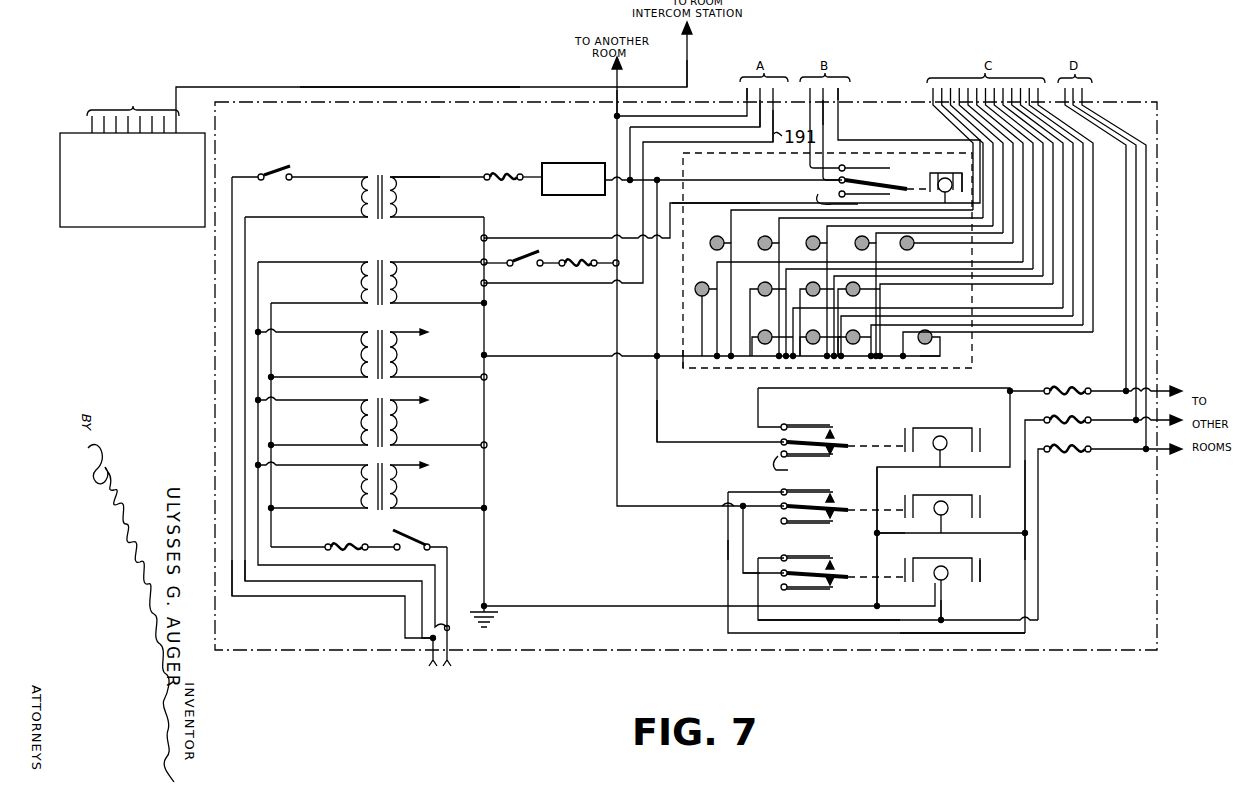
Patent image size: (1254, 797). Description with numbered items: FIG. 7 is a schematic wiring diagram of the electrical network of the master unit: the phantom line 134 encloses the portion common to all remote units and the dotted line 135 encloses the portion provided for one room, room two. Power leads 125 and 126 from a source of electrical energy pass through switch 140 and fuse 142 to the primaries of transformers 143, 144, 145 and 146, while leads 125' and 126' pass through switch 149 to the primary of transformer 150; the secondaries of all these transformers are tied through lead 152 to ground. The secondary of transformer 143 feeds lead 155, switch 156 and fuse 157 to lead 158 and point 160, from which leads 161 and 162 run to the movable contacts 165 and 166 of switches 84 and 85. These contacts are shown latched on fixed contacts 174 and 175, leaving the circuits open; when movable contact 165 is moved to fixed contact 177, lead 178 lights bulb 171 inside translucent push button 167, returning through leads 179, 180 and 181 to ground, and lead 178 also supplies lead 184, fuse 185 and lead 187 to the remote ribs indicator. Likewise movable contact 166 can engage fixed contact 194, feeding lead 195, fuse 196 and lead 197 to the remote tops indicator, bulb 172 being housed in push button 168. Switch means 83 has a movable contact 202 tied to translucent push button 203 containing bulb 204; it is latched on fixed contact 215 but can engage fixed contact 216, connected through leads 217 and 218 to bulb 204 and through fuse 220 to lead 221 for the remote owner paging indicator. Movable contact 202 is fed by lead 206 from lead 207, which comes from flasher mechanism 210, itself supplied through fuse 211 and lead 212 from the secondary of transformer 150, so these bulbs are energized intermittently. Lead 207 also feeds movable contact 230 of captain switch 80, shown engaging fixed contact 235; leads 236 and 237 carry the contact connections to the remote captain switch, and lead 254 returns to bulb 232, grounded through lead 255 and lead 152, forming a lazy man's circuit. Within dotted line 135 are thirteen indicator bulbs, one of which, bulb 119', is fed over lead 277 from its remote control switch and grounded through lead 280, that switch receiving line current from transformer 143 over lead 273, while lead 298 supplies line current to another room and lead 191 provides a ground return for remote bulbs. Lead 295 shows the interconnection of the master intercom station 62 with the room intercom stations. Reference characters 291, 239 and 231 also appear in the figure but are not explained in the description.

The master intercom station 62 is at (100, 227).
The lead 295 is at (402, 86).
The lead 298 is at (623, 72).
The lead 273 is at (720, 116).
The switch 149 is at (278, 166).
The transformer 150 is at (384, 176).
The lead 212 is at (414, 176).
The fuse 211 is at (498, 170).
The flasher mechanism 210 is at (570, 162).
The transformer 143 is at (385, 262).
The lead 155 is at (406, 266).
The transformer 144 is at (385, 332).
The transformer 145 is at (388, 400).
The transformer 146 is at (375, 470).
The lead 152 is at (486, 418).
The fuse 142 is at (352, 545).
The switch 140 is at (416, 542).
The lead 125 is at (404, 664).
The lead 126 is at (476, 611).
The lead 125' is at (259, 597).
The lead 126' is at (302, 593).
The lead 181 is at (634, 606).
The switch 156 is at (525, 248).
The fuse 157 is at (564, 272).
The lead 191 is at (576, 286).
The lead 158 is at (616, 318).
The lead 236 is at (794, 110).
The lead 254 is at (843, 104).
The conductor 291 is at (763, 122).
The lead 237 is at (826, 120).
The switch contact 239 is at (874, 178).
The movable contact 230 is at (888, 168).
The fixed contact 235 is at (815, 192).
The relay armature link 231 is at (928, 187).
The captain switch 80 is at (937, 172).
The bulb 232 is at (956, 176).
The lead 207 is at (693, 176).
The lead 255 is at (712, 202).
The dotted line 135 is at (690, 372).
The lead 206 is at (676, 404).
The bulb 119' is at (788, 284).
The lead 280 is at (940, 356).
The lead 277 is at (1106, 178).
The lead 187 is at (1134, 242).
The lead 221 is at (1134, 262).
The lead 197 is at (1156, 284).
The lead 218 is at (1020, 391).
The fuse 220 is at (1074, 386).
The fuse 185 is at (1086, 428).
The fuse 196 is at (1089, 460).
The lead 184 is at (1028, 496).
The lead 217 is at (967, 388).
The fixed contact 216 is at (798, 424).
The movable contact portion 202 is at (852, 437).
The fixed contact 215 is at (776, 470).
The switch means 83 is at (901, 426).
The translucent push button portion 203 is at (895, 426).
The bulb 204 is at (946, 436).
The point 160 is at (740, 496).
The fixed contact 177 is at (804, 492).
The movable contact portion 165 is at (844, 510).
The fixed contact 174 is at (804, 522).
The lead 161 is at (752, 508).
The bulb 171 is at (922, 506).
The switch 84 is at (946, 492).
The translucent push button portion 167 is at (976, 512).
The lead 179 is at (895, 534).
The fixed contact member 194 is at (800, 556).
The movable contact portion 166 is at (842, 574).
The fixed contact 175 is at (802, 590).
The lead 162 is at (738, 548).
The lead 178 is at (724, 540).
The switch 85 is at (962, 558).
The translucent push button portion 168 is at (976, 576).
The lead 180 is at (880, 582).
The bulb 172 is at (948, 580).
The lead 195 is at (822, 622).
The phantom line 134 is at (880, 650).